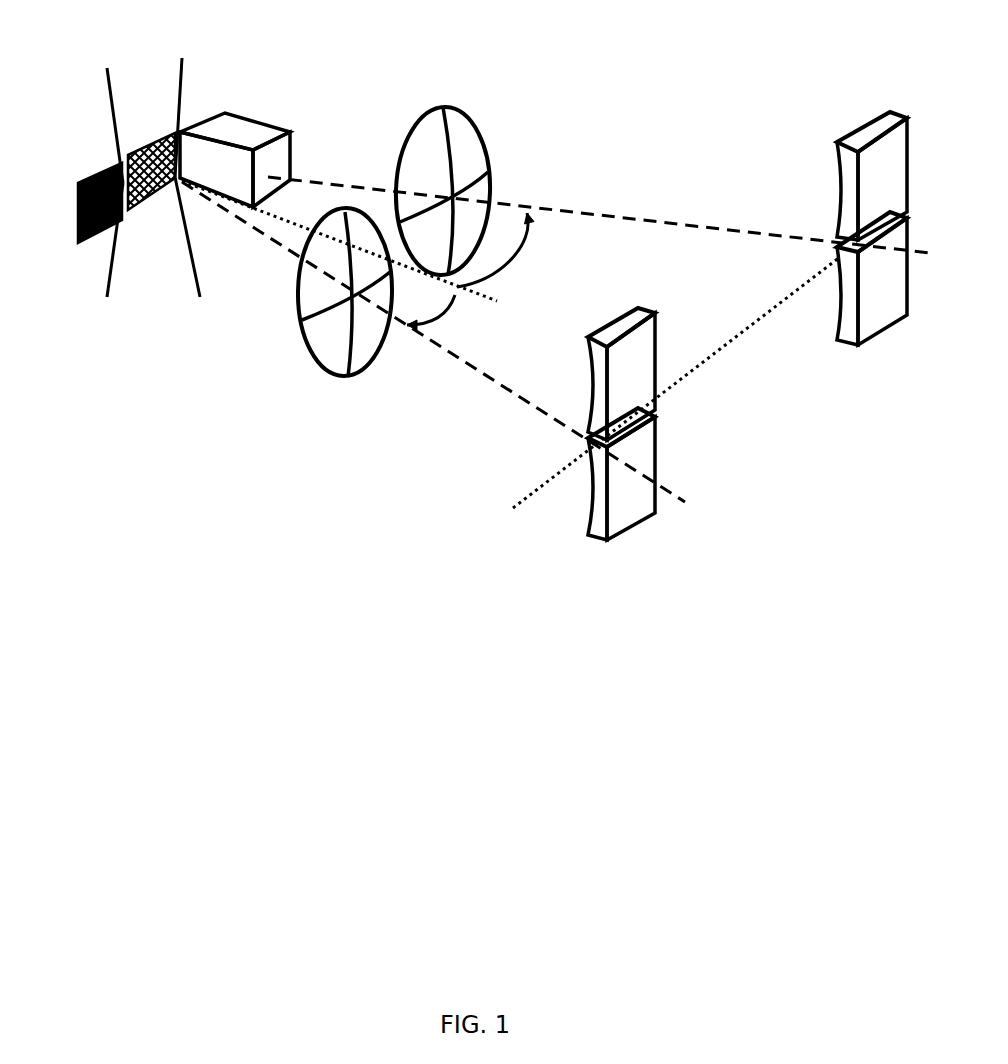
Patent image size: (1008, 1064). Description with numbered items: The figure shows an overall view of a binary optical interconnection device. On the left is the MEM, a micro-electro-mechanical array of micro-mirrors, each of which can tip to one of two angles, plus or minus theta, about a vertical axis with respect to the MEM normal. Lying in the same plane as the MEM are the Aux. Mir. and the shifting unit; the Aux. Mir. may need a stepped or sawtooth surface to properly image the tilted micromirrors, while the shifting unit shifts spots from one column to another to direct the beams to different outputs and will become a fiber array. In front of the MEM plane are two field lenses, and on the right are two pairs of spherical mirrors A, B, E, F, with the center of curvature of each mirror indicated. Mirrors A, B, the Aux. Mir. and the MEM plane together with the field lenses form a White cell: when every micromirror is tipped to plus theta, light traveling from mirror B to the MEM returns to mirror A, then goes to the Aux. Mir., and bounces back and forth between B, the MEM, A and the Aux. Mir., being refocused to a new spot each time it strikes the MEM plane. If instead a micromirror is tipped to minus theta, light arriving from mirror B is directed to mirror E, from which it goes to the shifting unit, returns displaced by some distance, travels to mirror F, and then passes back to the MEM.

The auxiliary mirror Aux. Mir. is at (76, 203).
The micro-electro-mechanical device MEM is at (151, 182).
The element shifting unit is at (253, 127).
The normal to the MEM plane MEM normal is at (377, 260).
The element field lenses is at (395, 273).
The mirror A is at (621, 374).
The mirror B is at (621, 474).
The mirror E is at (872, 176).
The mirror F is at (872, 278).